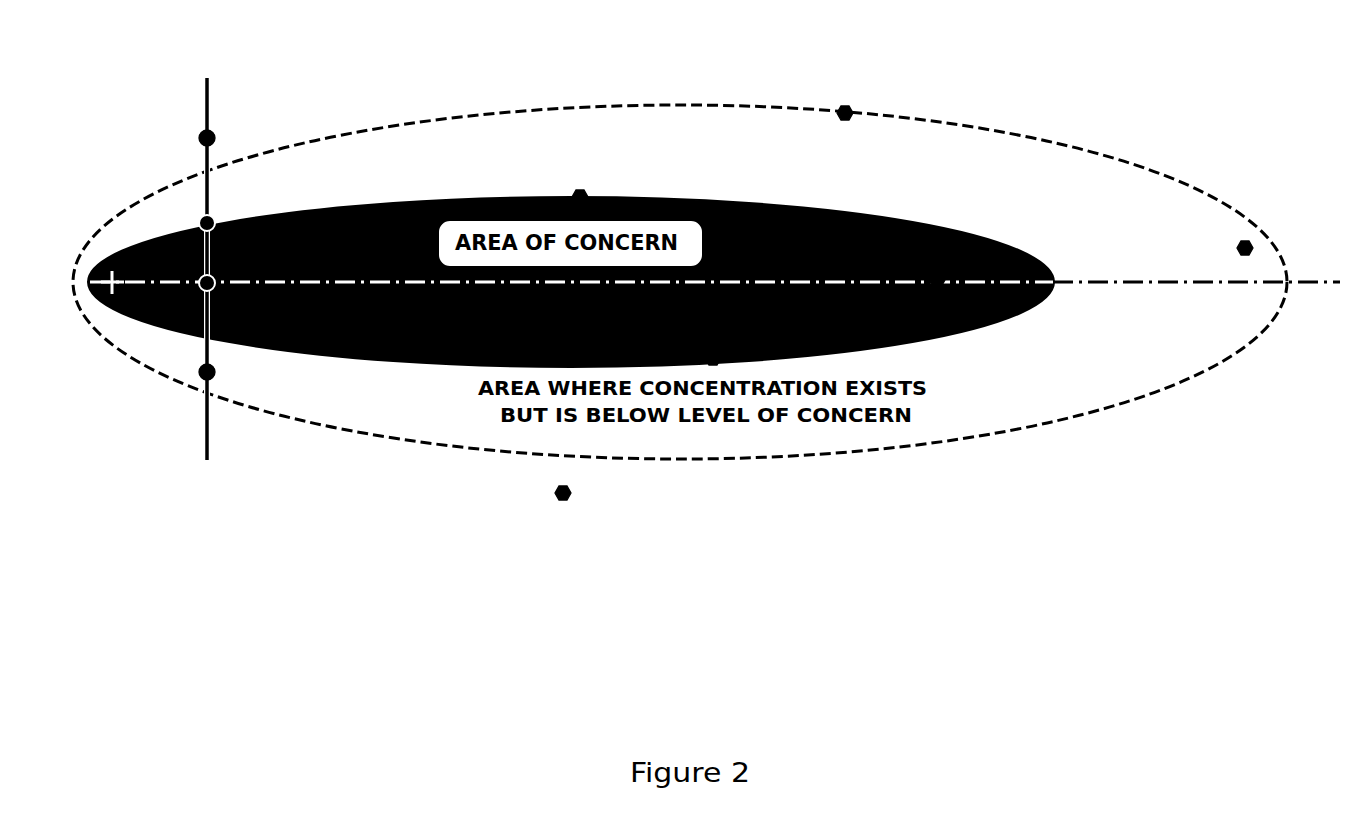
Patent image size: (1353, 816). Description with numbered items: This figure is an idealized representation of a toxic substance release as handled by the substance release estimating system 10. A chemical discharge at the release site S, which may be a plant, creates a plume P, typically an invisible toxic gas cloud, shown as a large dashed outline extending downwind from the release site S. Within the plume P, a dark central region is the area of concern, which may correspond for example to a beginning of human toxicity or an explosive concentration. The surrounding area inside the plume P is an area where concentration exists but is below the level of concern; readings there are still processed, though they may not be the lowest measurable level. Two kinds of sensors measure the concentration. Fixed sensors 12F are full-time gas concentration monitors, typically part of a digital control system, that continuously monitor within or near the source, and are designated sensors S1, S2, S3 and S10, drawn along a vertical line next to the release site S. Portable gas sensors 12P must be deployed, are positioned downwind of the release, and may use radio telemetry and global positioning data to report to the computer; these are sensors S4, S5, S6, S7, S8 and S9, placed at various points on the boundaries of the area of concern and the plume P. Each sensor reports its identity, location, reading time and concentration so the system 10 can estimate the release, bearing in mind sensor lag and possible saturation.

The substance release estimating system 10 is at (673, 74).
The fixed sensor 12F is at (220, 133).
The portable gas sensor 12P is at (593, 194).
The plume P is at (1085, 145).
The release site S is at (95, 294).
The sensor S1 is at (172, 214).
The sensor S2 is at (171, 259).
The sensor S3 is at (172, 354).
The sensor S4 is at (552, 176).
The sensor S5 is at (671, 334).
The sensor S6 is at (905, 258).
The sensor S7 is at (519, 494).
The sensor S8 is at (809, 89).
The sensor S9 is at (1202, 249).
The sensor S10 is at (158, 139).